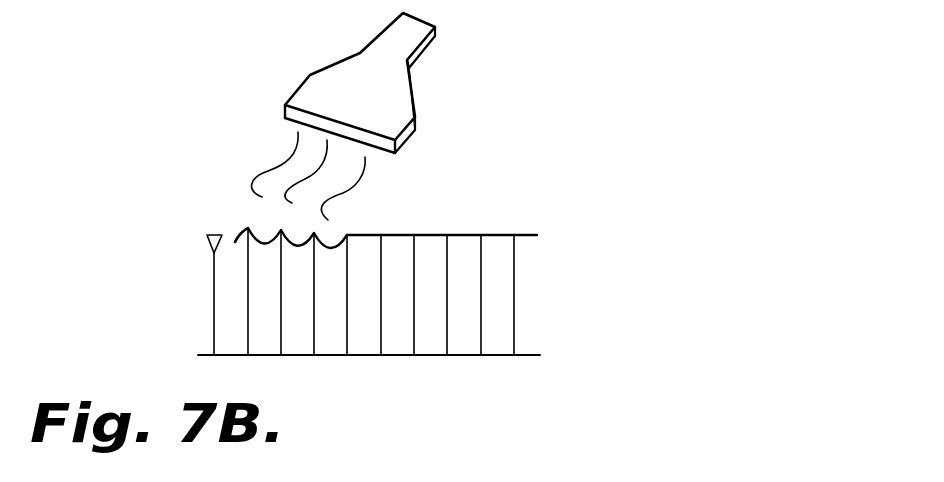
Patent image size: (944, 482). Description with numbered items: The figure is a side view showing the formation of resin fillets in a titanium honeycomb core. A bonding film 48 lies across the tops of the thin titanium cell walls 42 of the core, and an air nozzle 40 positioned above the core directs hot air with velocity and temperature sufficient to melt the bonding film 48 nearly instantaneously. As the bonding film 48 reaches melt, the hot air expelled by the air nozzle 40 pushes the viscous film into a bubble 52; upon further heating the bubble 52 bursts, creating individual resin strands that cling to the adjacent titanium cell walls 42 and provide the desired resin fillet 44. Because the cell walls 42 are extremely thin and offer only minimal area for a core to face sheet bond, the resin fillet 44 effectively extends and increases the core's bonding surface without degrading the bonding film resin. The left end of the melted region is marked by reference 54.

The air nozzle 40 is at (424, 74).
The cell walls 42 is at (515, 287).
The resin fillet 44 is at (205, 243).
The bonding film 48 is at (527, 236).
The bubble 52 is at (294, 244).
The edge of depression 54 is at (236, 243).